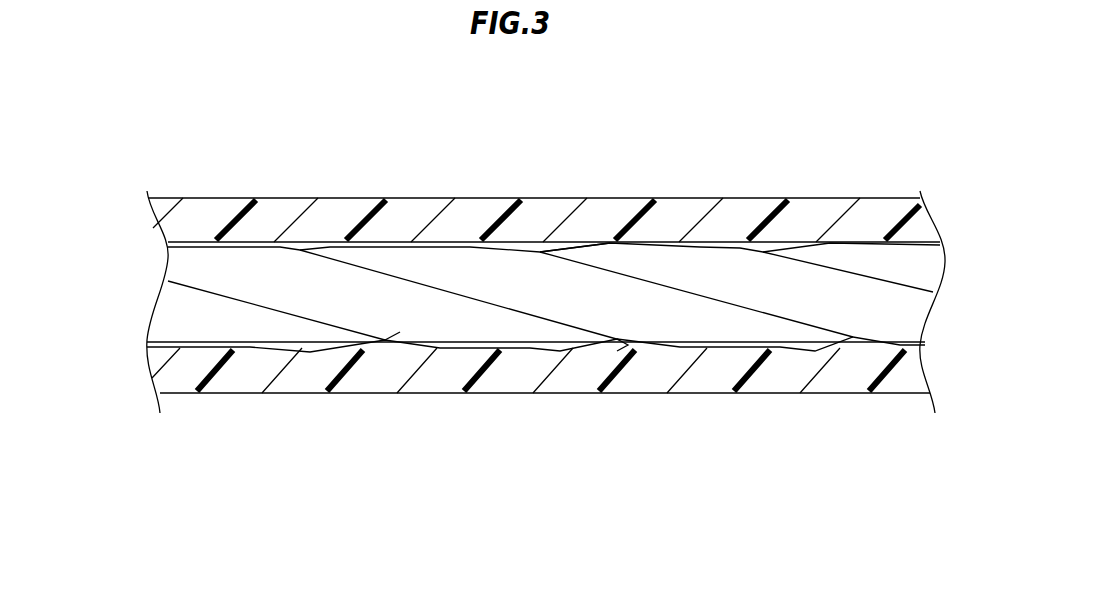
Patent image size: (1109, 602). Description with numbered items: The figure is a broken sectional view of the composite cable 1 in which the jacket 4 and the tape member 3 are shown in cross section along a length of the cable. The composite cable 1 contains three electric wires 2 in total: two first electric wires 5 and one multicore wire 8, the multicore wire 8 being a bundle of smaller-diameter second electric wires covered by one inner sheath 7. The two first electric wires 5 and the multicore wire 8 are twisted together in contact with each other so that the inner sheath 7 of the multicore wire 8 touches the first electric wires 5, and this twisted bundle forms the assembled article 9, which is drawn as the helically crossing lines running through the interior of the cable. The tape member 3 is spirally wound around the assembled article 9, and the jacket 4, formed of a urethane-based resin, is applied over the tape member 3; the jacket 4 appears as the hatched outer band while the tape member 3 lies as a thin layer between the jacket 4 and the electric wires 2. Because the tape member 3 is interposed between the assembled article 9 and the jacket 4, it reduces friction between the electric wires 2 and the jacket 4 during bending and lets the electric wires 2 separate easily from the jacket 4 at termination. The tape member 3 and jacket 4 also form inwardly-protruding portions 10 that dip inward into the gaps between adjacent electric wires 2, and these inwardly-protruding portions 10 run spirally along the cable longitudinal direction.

The composite cable 1 is at (300, 173).
The electric wire 2 is at (634, 244).
The tape member 3 is at (407, 245).
The jacket 4 is at (858, 213).
The first electric wire 5 is at (573, 308).
The inner sheath 7 is at (200, 335).
The multicore wire 8 is at (903, 315).
The assembled article 9 is at (401, 327).
The inwardly-protruding portion 10 is at (622, 348).